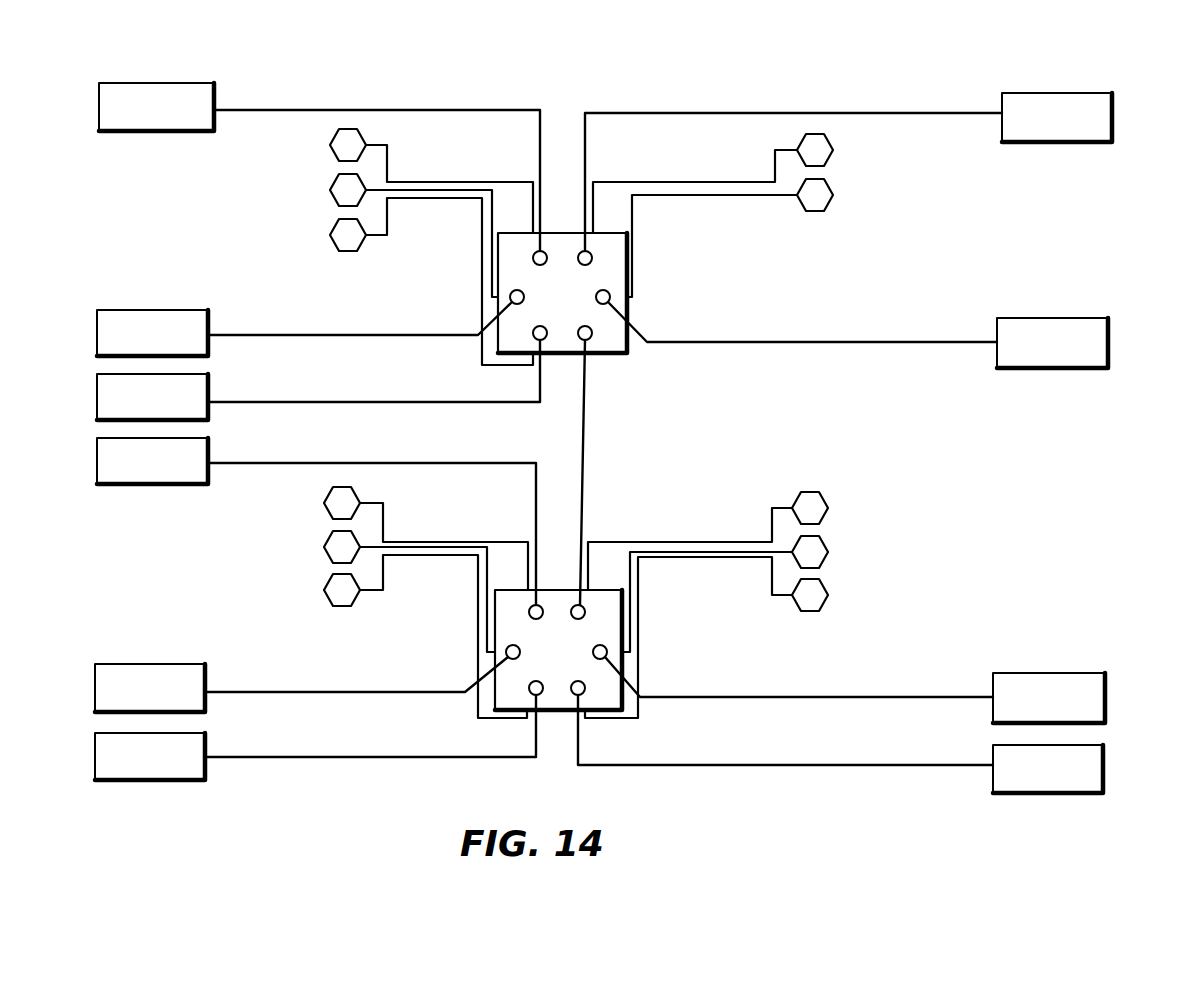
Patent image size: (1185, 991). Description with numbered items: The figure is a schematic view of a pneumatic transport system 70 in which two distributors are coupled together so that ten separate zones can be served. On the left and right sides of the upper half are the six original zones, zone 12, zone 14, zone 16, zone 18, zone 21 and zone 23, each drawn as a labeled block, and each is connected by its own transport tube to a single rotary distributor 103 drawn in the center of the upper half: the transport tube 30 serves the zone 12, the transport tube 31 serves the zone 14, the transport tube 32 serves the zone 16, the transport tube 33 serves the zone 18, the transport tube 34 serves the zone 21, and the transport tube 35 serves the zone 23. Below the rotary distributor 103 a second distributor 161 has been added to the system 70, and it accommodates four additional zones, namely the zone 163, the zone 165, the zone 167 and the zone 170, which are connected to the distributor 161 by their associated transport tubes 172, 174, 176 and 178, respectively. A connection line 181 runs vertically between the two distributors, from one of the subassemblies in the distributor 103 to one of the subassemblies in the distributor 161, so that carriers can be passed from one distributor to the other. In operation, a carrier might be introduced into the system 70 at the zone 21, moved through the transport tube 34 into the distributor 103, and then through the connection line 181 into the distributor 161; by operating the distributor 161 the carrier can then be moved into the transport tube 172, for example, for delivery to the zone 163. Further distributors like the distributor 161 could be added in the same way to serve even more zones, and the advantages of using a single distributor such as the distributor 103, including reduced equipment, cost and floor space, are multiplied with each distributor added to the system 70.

The system 70 is at (717, 62).
The zone 12 is at (213, 91).
The zone 14 is at (195, 310).
The zone 16 is at (200, 374).
The zone 18 is at (1114, 110).
The zone 21 is at (1020, 318).
The zone 23 is at (200, 438).
The transport tube 30 is at (287, 110).
The transport tube 31 is at (352, 334).
The transport tube 32 is at (352, 401).
The transport tube 33 is at (963, 112).
The transport tube 34 is at (940, 341).
The transport tube 35 is at (355, 462).
The rotary distributor 103 is at (660, 276).
The distributor 161 is at (660, 498).
The zone 163 is at (167, 664).
The zone 165 is at (178, 782).
The zone 167 is at (1064, 673).
The zone 170 is at (1106, 757).
The transport tube 172 is at (340, 690).
The transport tube 174 is at (338, 756).
The transport tube 176 is at (872, 696).
The transport tube 178 is at (862, 764).
The connection line 181 is at (586, 391).